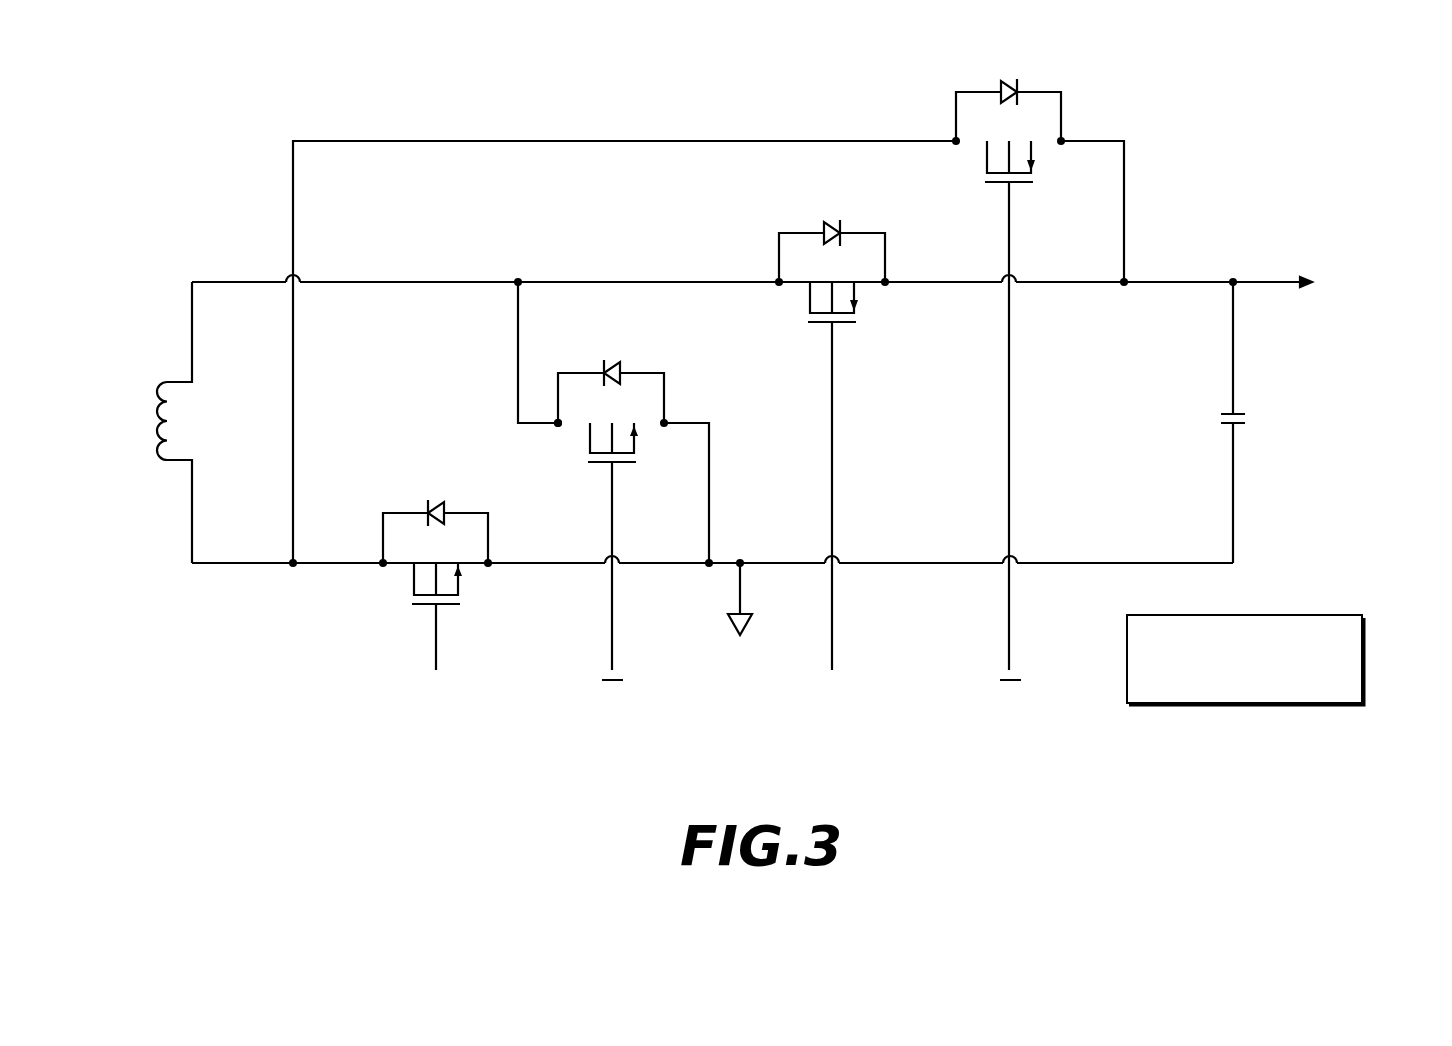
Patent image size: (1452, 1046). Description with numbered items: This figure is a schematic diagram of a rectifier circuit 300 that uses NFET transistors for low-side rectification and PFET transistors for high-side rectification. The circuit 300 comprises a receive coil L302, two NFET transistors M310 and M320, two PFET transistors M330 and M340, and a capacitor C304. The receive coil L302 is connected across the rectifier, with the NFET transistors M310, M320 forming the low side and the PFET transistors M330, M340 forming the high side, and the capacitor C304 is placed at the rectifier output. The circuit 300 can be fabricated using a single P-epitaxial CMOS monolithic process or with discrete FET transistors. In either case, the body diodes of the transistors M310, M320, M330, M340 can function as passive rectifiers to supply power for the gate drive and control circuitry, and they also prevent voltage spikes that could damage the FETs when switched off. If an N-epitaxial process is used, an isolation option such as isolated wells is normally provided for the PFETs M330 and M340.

The circuit 300 is at (1292, 115).
The receive coil L302 is at (149, 422).
The capacitor C304 is at (1263, 422).
The NFET transistor M310 is at (452, 575).
The NFET transistor M320 is at (627, 504).
The PFET transistor M330 is at (848, 433).
The PFET transistor M340 is at (1024, 364).